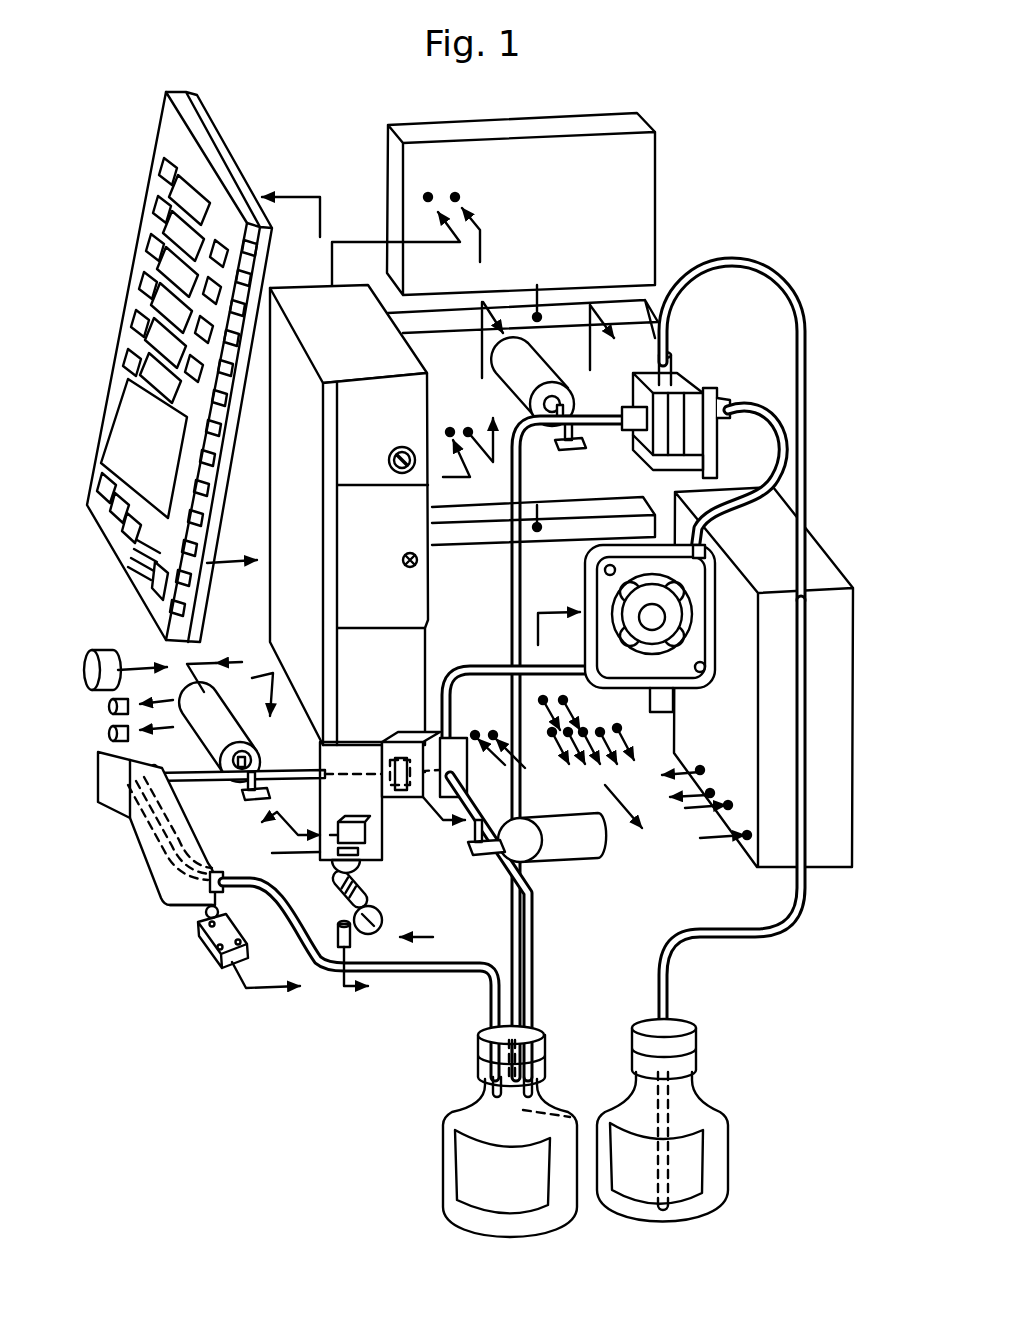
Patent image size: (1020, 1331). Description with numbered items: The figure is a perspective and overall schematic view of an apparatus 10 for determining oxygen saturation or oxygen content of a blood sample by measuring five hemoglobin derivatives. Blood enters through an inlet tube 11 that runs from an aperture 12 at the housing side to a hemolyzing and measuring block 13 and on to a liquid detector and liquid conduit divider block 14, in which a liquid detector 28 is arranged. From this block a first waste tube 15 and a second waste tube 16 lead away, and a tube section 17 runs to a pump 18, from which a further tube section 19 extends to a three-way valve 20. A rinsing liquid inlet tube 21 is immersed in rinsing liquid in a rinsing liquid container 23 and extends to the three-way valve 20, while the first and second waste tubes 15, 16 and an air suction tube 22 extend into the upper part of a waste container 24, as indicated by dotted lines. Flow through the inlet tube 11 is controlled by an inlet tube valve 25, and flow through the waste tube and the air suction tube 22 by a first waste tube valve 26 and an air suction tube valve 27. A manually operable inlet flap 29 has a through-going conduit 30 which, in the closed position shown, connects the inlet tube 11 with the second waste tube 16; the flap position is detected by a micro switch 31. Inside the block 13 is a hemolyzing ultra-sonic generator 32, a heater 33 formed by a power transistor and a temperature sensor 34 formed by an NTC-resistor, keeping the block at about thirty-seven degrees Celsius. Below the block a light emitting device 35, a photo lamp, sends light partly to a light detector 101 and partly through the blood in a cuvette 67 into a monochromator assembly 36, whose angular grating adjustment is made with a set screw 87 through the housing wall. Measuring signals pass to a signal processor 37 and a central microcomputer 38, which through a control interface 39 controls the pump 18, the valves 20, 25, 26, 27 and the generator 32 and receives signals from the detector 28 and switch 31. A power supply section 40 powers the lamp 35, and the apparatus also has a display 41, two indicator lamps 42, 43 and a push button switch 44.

The apparatus 10 is at (726, 243).
The inlet tube 11 is at (197, 777).
The aperture 12 is at (159, 776).
The hemolyzing and measuring block 13 is at (383, 813).
The liquid detector and liquid conduit divider block 14 is at (463, 727).
The first waste tube 15 is at (535, 957).
The second waste tube 16 is at (363, 972).
The tube section 17 is at (495, 666).
The pump 18 is at (710, 658).
The further tube section 19 is at (785, 448).
The three-way valve 20 is at (702, 378).
The rinsing liquid inlet tube 21 is at (747, 936).
The air suction tube 22 is at (512, 587).
The rinsing liquid container 23 is at (728, 1149).
The waste container 24 is at (447, 1160).
The inlet tube valve 25 is at (230, 662).
The first waste tube valve 26 is at (565, 857).
The air suction tube valve 27 is at (528, 355).
The liquid detector 28 is at (402, 757).
The inlet flap 29 is at (177, 904).
The through-going conduit 30 is at (153, 853).
The micro switch 31 is at (209, 957).
The hemolyzing ultra-sonic generator 32 is at (556, 762).
The heater 33 is at (350, 820).
The temperature sensor 34 is at (376, 852).
The light emitting device 35 is at (330, 893).
The monochromator assembly 36 is at (304, 290).
The signal processor 37 is at (655, 180).
The central microcomputer 38 is at (660, 330).
The control interface 39 is at (580, 525).
The power supply section 40 is at (818, 555).
The display 41 is at (158, 145).
The indicator lamp 42 is at (112, 734).
The indicator lamp 43 is at (112, 708).
The push button switch 44 is at (102, 654).
The cuvette 67 is at (350, 768).
The set screw 87 is at (397, 448).
The light detector 101 is at (338, 931).